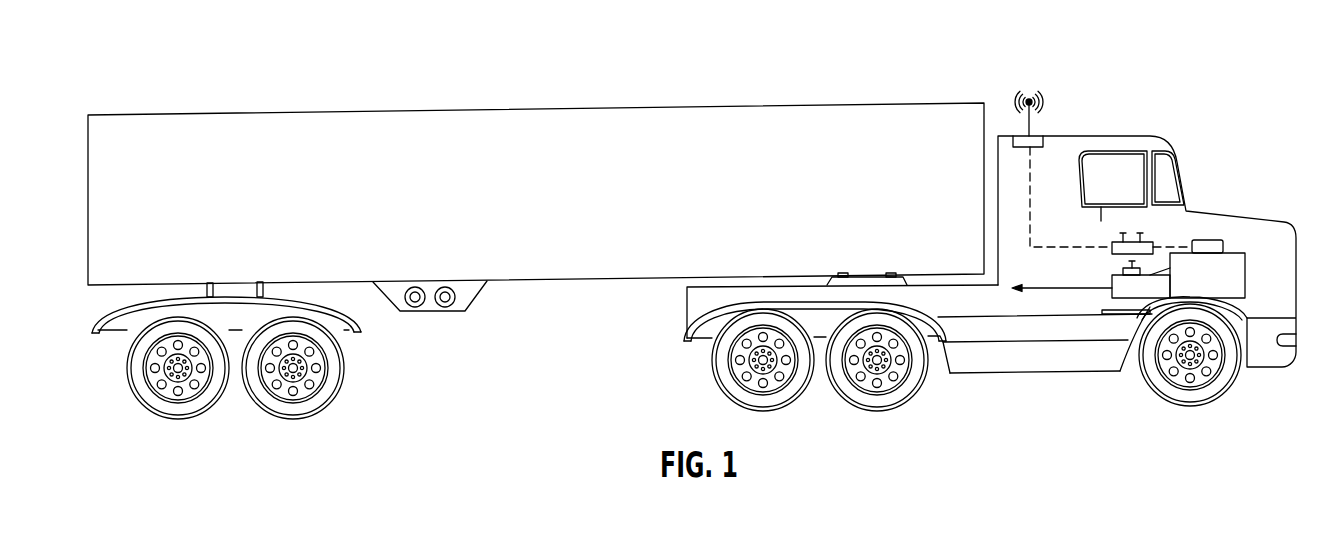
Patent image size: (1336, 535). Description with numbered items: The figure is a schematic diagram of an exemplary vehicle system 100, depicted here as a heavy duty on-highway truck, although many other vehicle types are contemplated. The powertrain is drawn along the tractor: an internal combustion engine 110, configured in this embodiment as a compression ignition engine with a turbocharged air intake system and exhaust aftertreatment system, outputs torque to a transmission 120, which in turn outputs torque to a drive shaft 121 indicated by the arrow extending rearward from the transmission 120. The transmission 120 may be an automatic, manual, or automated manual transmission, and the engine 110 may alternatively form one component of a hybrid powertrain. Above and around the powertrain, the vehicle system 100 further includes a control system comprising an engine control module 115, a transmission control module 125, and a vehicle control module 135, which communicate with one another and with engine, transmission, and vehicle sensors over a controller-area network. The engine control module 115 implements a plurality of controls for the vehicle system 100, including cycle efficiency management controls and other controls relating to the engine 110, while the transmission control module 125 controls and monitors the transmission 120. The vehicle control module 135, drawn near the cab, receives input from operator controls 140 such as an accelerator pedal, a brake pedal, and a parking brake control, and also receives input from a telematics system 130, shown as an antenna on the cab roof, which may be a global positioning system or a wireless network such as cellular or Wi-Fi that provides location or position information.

The vehicle 100 is at (1230, 47).
The internal combustion engine 110 is at (1226, 290).
The engine control module 115 is at (1224, 246).
The transmission 120 is at (1142, 299).
The drive shaft 121 is at (1067, 290).
The transmission control module 125 is at (1121, 271).
The telematics system 130 is at (1031, 89).
The vehicle control module 135 is at (1152, 243).
The operator controls 140 is at (1116, 151).